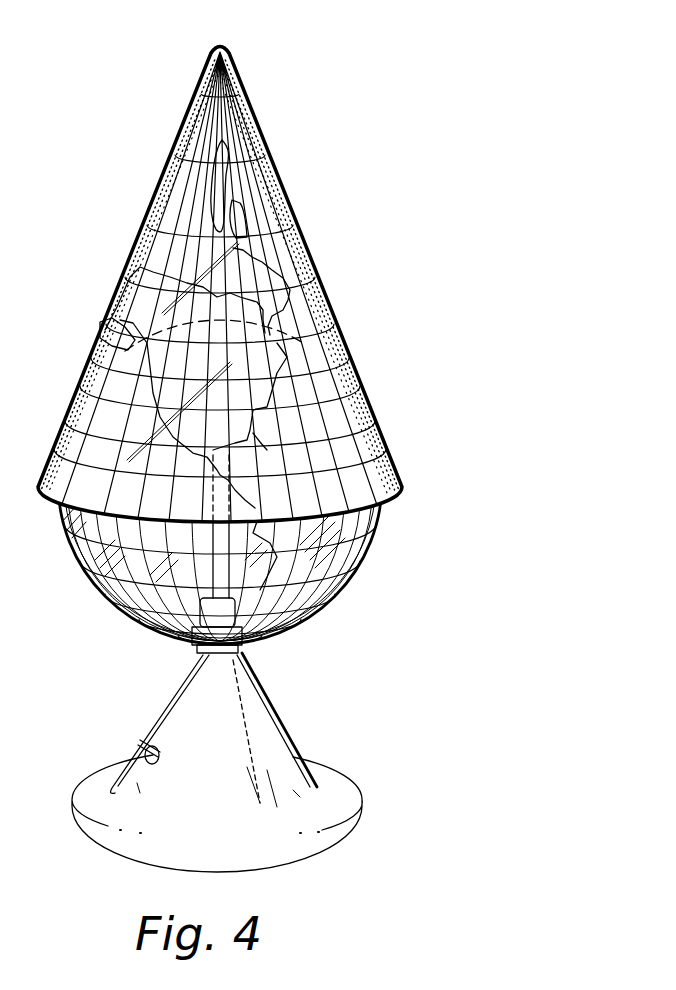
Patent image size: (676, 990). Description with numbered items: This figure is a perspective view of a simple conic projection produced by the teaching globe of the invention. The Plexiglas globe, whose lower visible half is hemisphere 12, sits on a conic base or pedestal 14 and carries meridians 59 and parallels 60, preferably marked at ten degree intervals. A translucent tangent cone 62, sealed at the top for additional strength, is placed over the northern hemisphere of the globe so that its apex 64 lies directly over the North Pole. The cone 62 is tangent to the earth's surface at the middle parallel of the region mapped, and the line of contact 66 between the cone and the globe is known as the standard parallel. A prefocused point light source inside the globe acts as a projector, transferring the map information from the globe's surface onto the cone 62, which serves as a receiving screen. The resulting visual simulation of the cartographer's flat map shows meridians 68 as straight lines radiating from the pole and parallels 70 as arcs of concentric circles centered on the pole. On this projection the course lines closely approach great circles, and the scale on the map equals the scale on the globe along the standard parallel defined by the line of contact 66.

The hemisphere 12 is at (353, 547).
The conic base or pedestal 14 is at (211, 776).
The meridians 59 is at (357, 524).
The parallels 60 is at (310, 613).
The tangent cone 62 is at (240, 180).
The apex 64 is at (219, 47).
The line of contact 66 is at (73, 407).
The meridians 68 is at (230, 283).
The parallels 70 is at (222, 92).